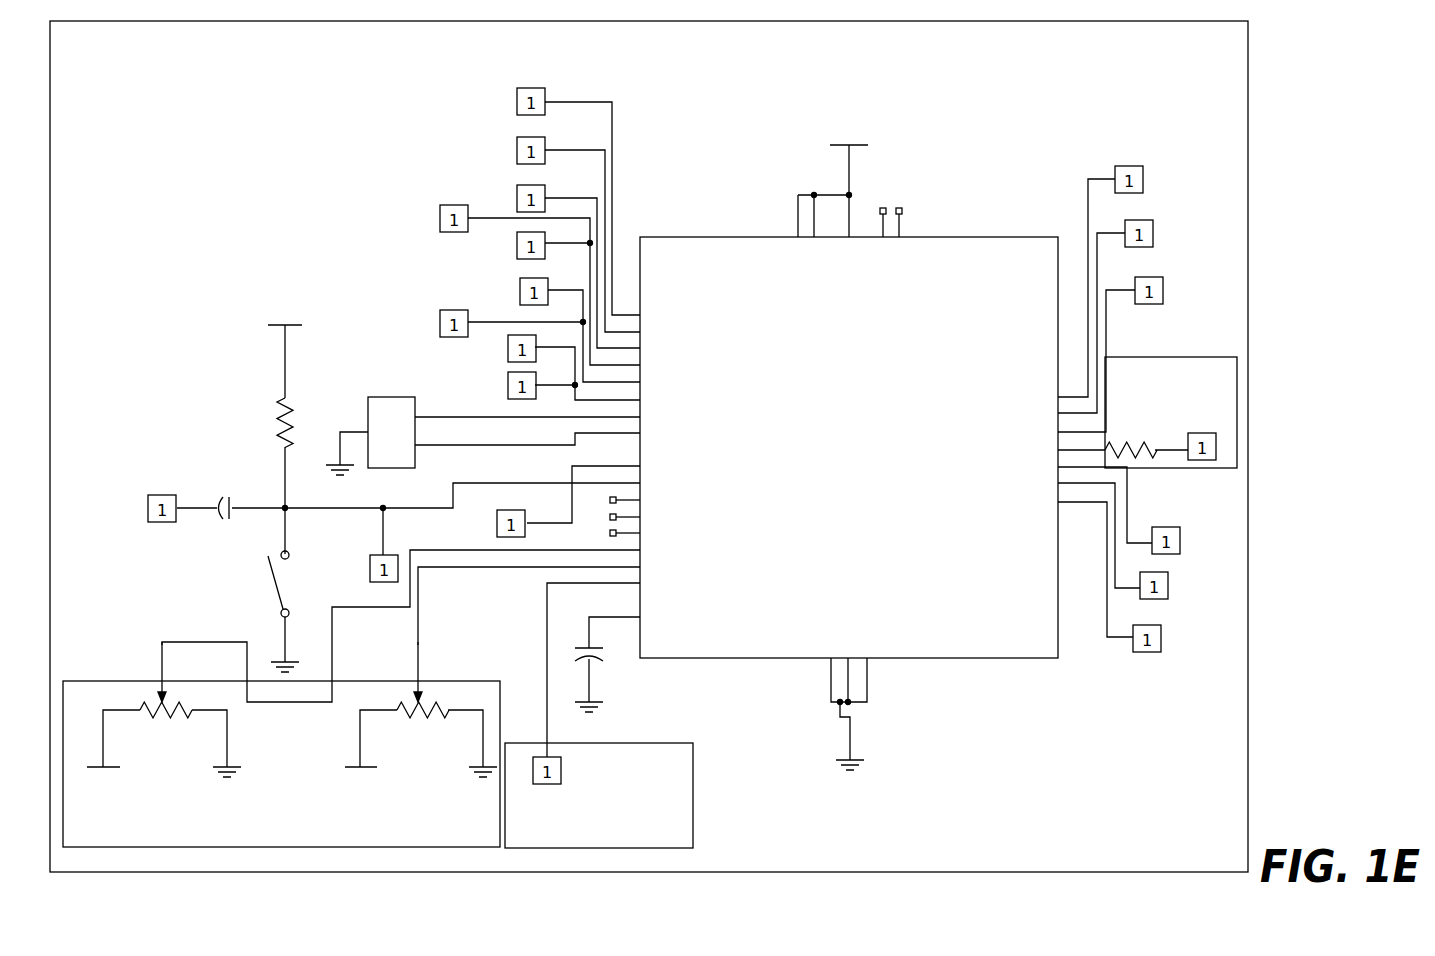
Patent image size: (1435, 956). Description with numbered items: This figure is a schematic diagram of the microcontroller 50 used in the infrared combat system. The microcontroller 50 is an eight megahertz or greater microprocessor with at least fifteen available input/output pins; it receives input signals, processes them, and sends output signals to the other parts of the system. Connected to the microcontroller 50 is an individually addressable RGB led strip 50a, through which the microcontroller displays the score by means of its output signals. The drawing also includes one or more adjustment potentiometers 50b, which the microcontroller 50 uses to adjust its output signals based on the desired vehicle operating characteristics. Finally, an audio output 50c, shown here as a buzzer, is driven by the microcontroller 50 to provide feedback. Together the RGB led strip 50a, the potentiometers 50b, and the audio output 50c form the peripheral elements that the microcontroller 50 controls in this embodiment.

The microcontroller 50 is at (649, 446).
The RGB led strip 50a is at (1147, 412).
The potentiometers 50b is at (282, 744).
The audio output 50c is at (599, 794).